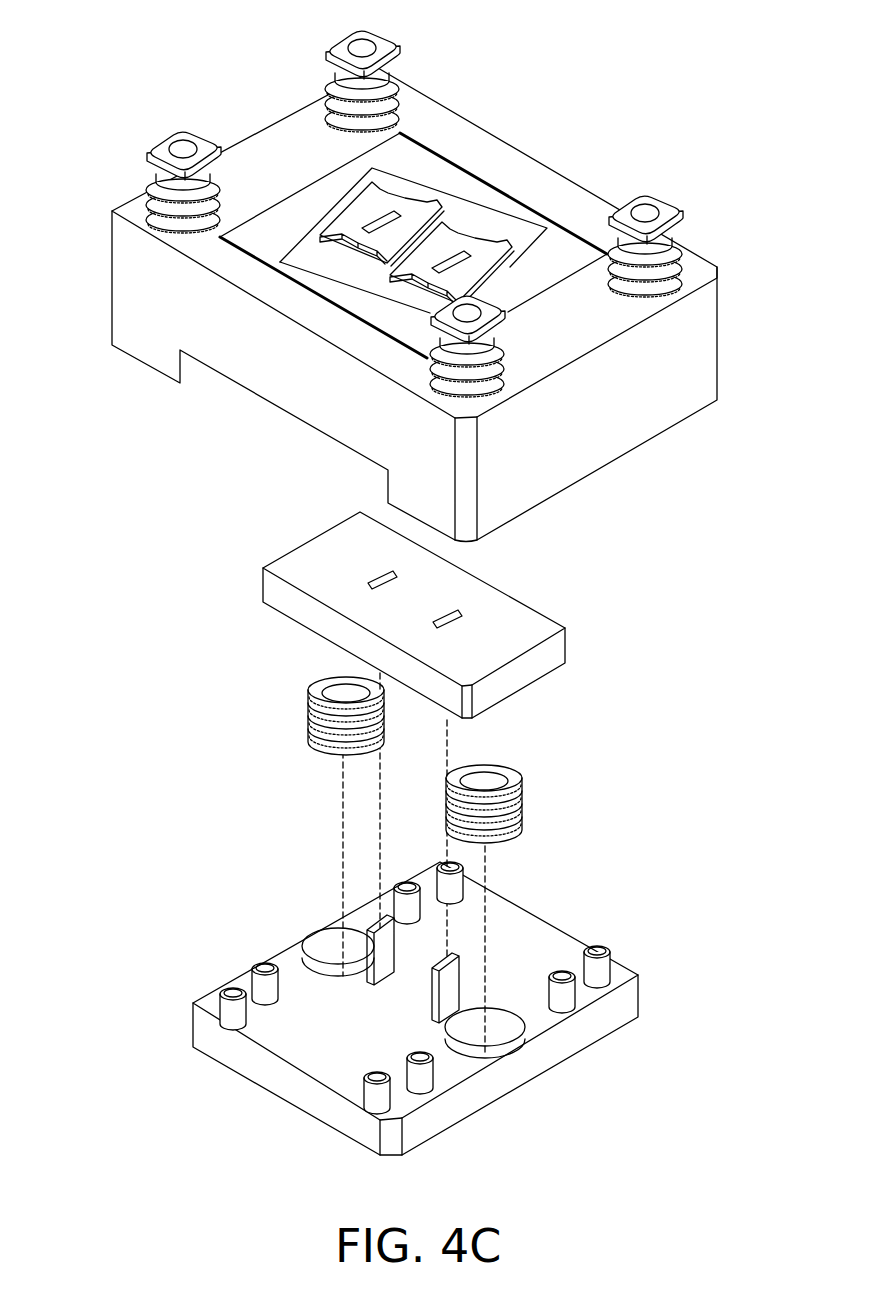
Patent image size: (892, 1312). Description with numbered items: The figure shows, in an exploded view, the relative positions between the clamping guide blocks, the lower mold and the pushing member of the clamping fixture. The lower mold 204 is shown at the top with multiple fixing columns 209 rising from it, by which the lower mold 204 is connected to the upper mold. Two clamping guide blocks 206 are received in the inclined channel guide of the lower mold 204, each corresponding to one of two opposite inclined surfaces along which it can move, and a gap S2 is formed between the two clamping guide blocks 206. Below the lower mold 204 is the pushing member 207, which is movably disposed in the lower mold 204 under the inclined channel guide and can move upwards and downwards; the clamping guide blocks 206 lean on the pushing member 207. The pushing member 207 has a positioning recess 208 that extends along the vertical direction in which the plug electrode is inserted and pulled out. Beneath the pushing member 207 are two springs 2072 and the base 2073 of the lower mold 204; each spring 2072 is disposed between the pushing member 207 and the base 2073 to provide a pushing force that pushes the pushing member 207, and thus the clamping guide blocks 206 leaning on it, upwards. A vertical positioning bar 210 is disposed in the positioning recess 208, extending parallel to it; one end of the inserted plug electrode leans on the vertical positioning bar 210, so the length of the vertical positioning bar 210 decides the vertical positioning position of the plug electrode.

The lower mold 204 is at (766, 230).
The clamping guide block 206 is at (373, 193).
The pushing member 207 is at (567, 628).
The positioning recess 208 is at (378, 580).
The fixing column 209 is at (154, 178).
The vertical positioning bar 210 is at (381, 922).
The spring 2072 is at (306, 722).
The base 2073 is at (578, 1042).
The gap S2 is at (389, 210).